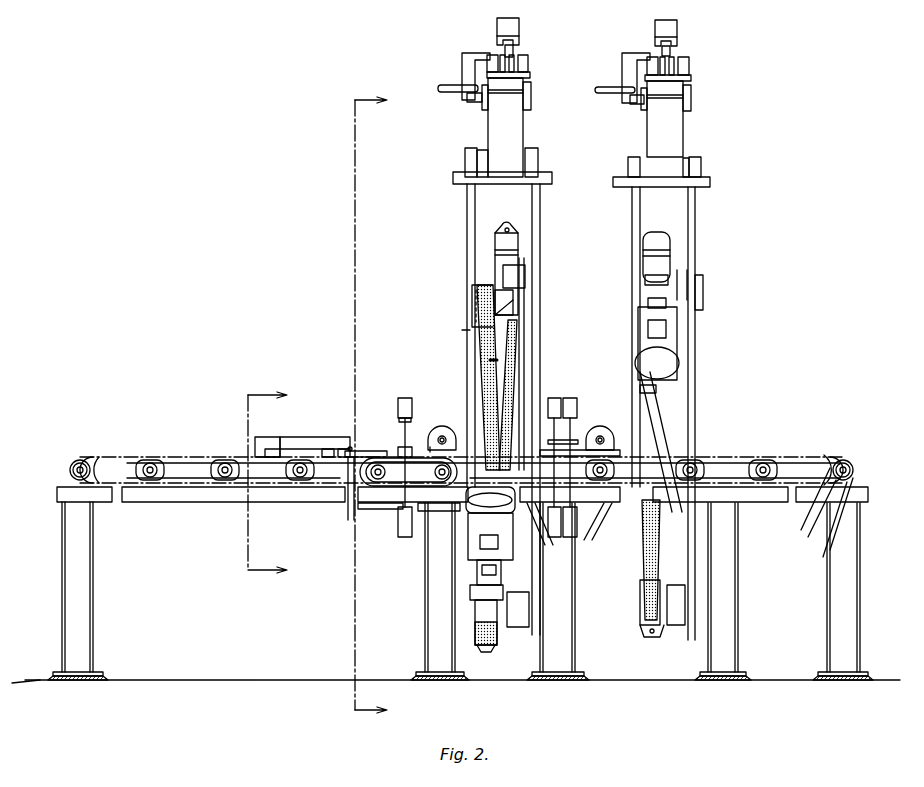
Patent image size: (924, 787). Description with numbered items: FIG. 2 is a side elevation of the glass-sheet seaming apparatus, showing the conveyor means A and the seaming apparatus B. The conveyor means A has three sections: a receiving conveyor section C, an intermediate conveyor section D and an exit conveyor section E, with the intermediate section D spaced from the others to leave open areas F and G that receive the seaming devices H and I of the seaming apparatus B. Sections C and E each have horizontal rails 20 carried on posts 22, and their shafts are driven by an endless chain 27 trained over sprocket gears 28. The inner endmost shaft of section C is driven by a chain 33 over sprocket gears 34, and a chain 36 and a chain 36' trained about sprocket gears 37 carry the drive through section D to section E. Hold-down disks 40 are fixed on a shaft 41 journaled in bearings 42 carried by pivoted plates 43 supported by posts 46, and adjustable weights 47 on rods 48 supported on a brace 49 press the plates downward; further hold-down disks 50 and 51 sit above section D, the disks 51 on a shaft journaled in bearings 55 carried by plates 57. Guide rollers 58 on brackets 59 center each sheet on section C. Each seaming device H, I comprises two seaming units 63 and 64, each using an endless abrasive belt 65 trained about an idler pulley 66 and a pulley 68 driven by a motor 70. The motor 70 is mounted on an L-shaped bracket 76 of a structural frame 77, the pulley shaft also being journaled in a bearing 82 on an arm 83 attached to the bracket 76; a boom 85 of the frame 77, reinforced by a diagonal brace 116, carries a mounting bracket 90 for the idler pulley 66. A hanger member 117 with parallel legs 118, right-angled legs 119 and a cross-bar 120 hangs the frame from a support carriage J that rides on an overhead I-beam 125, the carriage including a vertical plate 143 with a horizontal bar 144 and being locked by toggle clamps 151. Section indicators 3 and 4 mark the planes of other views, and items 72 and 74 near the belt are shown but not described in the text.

The section line 3- 3 is at (343, 111).
The section line 4- 4 is at (236, 407).
The rail 20 is at (178, 497).
The post 22 is at (78, 605).
The endless chain 27 is at (180, 460).
The sprocket gear 28 is at (150, 467).
The chain 33 is at (362, 490).
The sprocket gear 34 is at (383, 510).
The chain 36 is at (569, 532).
The chain 36' is at (613, 521).
The sprocket gear 37 is at (608, 508).
The disk 40 is at (430, 445).
The shaft 41 is at (440, 437).
The bearing 42 is at (446, 428).
The plate 43 is at (380, 458).
The post 46 is at (428, 505).
The adjustable weight 47 is at (400, 400).
The rod 48 is at (400, 420).
The brace 49 is at (400, 449).
The hold-down disk 50 is at (552, 420).
The hold-down disk 51 is at (600, 437).
The bearing 55 is at (612, 440).
The plate 57 is at (610, 447).
The guide roller 58 is at (330, 447).
The bracket 59 is at (288, 445).
The seaming unit 63 is at (450, 302).
The seaming unit 64 is at (716, 305).
The abrasive belt 65 is at (470, 318).
The pulley 66 is at (517, 300).
The pulley 68 is at (490, 640).
The motor 70 is at (480, 535).
The wedge 72 is at (480, 330).
The wedge face 74 is at (490, 360).
The L-shaped bracket 76 is at (462, 577).
The structural frame 77 is at (530, 343).
The bearing 82 is at (506, 225).
The arm 83 is at (512, 246).
The support bar 85 is at (520, 358).
The mounting bracket 90 is at (523, 286).
The brace 116 is at (642, 395).
The hanger member 117 is at (456, 227).
The leg 118 is at (470, 246).
The leg 119 is at (466, 160).
The cross-bar 120 is at (484, 158).
The I-beam 125 is at (518, 46).
The plate 143 is at (508, 135).
The horizontal bar 144 is at (458, 180).
The toggle clamp 151 is at (452, 55).
The conveyor means A is at (131, 437).
The seaming apparatus B is at (279, 330).
The receiving conveyor section C is at (203, 440).
The intermediate conveyor section D is at (591, 370).
The exit conveyor section E is at (791, 433).
The open area F is at (462, 566).
The open area G is at (631, 541).
The seaming device H is at (450, 285).
The seaming device I is at (718, 283).
The support carriage J is at (544, 97).